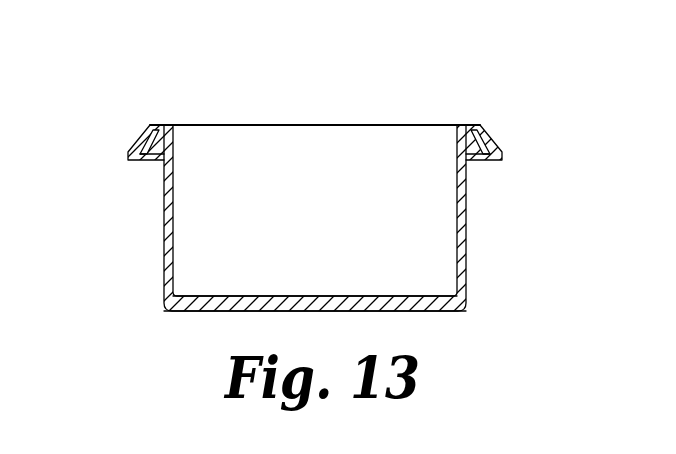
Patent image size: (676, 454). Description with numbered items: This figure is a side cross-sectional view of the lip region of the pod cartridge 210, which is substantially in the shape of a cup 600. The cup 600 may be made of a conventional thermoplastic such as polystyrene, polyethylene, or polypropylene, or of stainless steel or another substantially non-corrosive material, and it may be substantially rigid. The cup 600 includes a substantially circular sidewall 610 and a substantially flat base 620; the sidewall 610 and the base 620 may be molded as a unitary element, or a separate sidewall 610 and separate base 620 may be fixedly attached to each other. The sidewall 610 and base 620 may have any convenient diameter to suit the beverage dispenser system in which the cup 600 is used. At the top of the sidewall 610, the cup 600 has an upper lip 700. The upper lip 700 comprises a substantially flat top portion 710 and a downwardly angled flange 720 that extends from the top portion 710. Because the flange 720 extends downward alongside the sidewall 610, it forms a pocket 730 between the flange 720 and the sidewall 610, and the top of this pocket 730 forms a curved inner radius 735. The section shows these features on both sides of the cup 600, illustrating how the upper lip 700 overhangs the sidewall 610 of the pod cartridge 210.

The pod cartridge 210 is at (308, 174).
The cup 600 is at (308, 183).
The sidewall 610 is at (468, 232).
The base 620 is at (468, 308).
The upper lip 700 is at (308, 142).
The top portion 710 is at (308, 146).
The flange 720 is at (308, 159).
The pocket 730 is at (312, 190).
The curved inner radius 735 is at (150, 160).